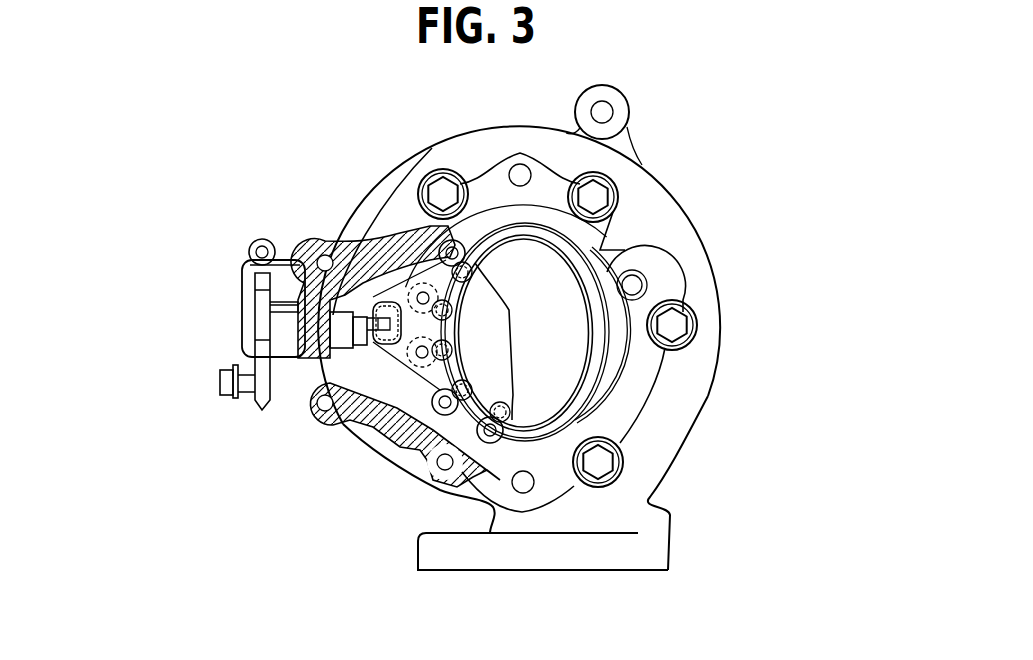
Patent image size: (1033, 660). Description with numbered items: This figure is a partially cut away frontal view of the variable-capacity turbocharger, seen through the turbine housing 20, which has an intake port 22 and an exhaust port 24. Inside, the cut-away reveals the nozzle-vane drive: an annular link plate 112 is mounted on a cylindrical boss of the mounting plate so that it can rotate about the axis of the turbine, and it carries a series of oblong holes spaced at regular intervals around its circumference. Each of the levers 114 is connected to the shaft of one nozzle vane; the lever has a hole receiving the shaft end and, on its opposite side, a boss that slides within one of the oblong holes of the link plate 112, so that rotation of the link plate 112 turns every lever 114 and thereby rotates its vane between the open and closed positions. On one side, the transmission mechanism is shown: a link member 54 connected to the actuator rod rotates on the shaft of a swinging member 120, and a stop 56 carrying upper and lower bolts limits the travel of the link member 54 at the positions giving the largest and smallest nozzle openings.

The turbine housing 20 is at (496, 138).
The intake port 22 is at (627, 557).
The exhaust port 24 is at (576, 370).
The link member 54 is at (265, 412).
The stop 56 is at (293, 240).
The link plate 112 is at (406, 266).
The lever 114 is at (465, 315).
The swinging member 120 is at (283, 335).